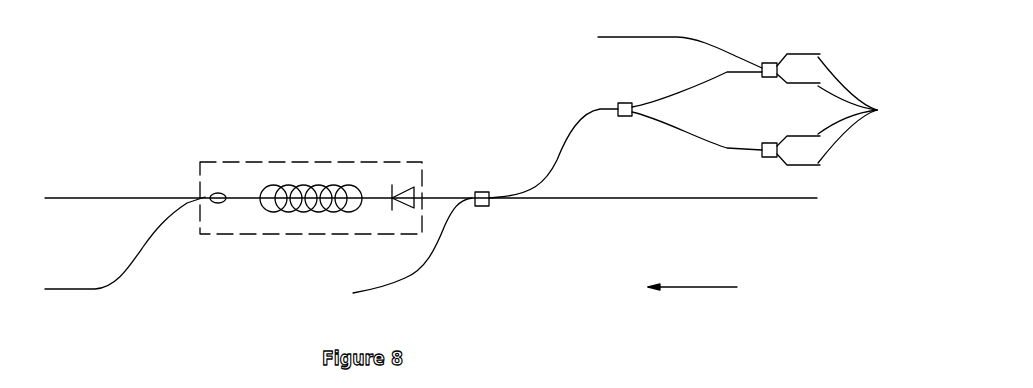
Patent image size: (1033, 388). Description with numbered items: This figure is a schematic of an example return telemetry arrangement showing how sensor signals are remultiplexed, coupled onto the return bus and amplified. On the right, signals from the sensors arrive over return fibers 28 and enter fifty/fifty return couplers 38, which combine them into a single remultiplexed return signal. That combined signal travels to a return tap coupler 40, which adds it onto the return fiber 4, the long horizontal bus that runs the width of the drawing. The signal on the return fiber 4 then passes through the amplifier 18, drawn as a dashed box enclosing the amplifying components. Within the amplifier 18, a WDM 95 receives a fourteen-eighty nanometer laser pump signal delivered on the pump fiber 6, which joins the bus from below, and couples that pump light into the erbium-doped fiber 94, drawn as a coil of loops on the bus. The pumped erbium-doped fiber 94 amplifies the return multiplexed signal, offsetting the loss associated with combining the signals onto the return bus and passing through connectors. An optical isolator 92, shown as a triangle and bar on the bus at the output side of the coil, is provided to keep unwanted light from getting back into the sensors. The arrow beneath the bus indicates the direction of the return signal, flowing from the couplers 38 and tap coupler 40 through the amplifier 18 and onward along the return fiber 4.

The return fiber 4 is at (70, 199).
The pump fiber 6 is at (63, 291).
The amplifier 18 is at (254, 241).
The WDM 95 is at (218, 192).
The erbium-doped fiber 94 is at (313, 185).
The optical isolator 92 is at (405, 187).
The return tap coupler 40 is at (487, 206).
The return coupler 38 is at (618, 103).
The return fiber 28 is at (877, 110).